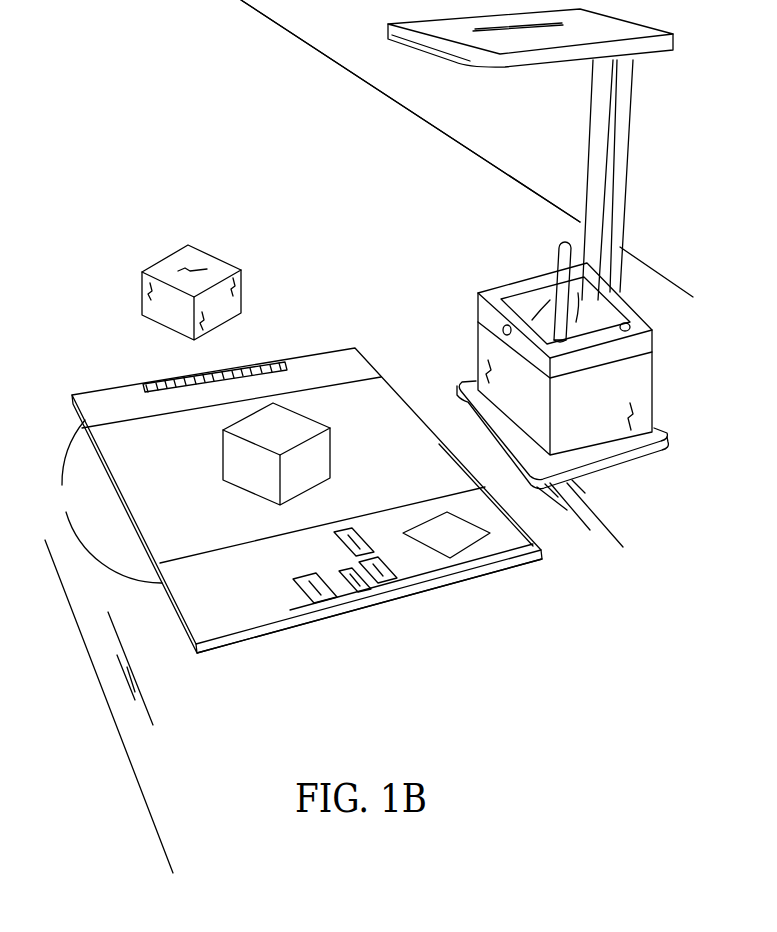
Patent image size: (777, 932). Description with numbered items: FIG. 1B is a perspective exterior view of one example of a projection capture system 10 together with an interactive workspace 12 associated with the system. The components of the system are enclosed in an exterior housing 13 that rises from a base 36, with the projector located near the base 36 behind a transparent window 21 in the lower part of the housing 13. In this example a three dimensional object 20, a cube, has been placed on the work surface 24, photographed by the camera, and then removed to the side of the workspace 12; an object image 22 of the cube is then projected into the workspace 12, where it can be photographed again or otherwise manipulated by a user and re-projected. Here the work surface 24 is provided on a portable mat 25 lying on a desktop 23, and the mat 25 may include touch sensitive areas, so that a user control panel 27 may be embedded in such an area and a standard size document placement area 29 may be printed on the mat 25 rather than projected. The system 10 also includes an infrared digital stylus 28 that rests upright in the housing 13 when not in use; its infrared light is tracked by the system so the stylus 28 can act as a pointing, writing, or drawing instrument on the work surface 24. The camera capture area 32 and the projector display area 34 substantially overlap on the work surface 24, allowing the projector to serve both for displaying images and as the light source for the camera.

The projection capture system 10 is at (497, 195).
The interactive workspace 12 is at (380, 351).
The exterior housing 13 is at (593, 84).
The object 20 is at (177, 262).
The transparent window 21 is at (507, 292).
The object image 22 is at (310, 432).
The desktop 23 is at (130, 718).
The work surface 24 is at (185, 509).
The portable mat 25 is at (267, 637).
The user control panel 27 is at (398, 588).
The infrared digital stylus 28 is at (558, 262).
The document placement area 29 is at (383, 412).
The camera capture area 32 is at (93, 501).
The projector display area 34 is at (133, 503).
The base 36 is at (650, 441).